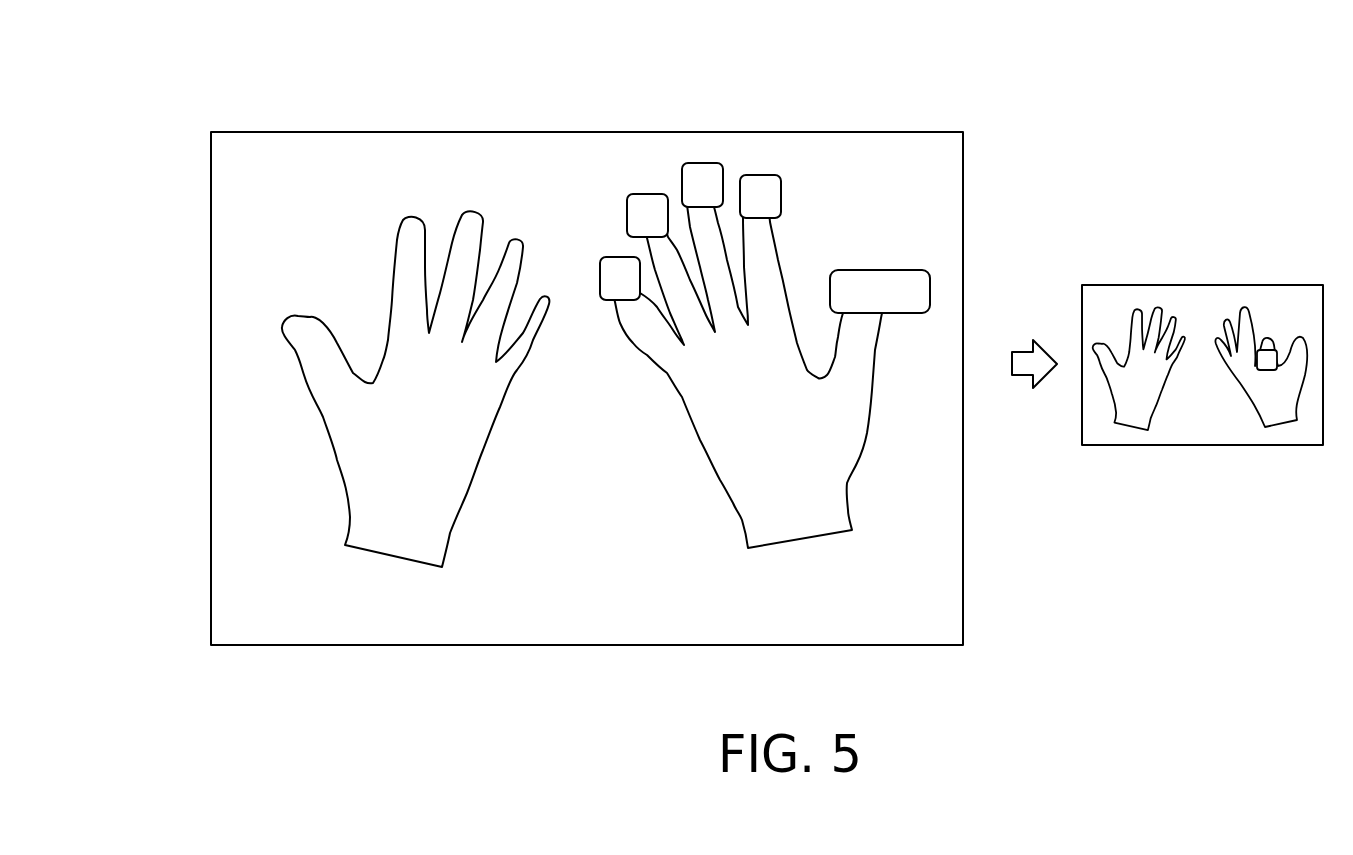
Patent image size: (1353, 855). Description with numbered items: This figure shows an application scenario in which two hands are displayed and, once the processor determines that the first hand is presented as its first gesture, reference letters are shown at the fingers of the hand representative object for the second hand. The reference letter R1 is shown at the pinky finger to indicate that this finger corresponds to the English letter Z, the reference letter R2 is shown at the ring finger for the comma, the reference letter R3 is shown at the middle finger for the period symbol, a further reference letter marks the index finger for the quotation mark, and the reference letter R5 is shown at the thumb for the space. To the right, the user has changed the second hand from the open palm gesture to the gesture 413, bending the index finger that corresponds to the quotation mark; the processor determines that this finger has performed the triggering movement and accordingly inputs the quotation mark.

The reference letter R1 is at (620, 257).
The reference letter R2 is at (647, 194).
The reference letter R3 is at (702, 163).
The reference letter R5 is at (880, 270).
The gesture 413 is at (1277, 407).